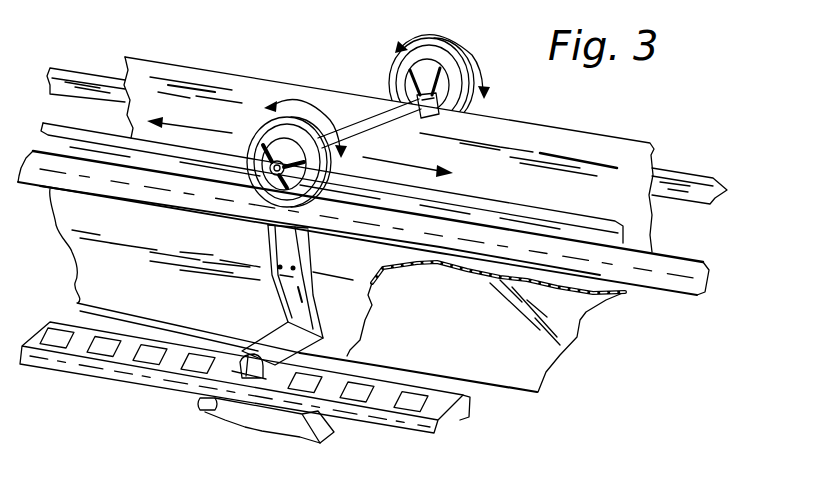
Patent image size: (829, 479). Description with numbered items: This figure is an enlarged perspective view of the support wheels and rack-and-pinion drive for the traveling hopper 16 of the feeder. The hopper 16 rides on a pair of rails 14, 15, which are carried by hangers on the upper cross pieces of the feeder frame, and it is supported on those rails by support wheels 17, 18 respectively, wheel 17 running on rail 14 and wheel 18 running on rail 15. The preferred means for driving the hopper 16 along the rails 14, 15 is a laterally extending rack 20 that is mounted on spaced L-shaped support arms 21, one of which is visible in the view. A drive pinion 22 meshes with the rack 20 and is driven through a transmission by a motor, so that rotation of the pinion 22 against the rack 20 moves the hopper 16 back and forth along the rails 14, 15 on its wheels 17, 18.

The rail 14 is at (673, 168).
The rail 15 is at (673, 270).
The traveling hopper 16 is at (193, 95).
The support wheel 17 is at (448, 62).
The support wheel 18 is at (262, 135).
The rack 20 is at (466, 396).
The L-shaped support arm 21 is at (268, 294).
The drive pinion 22 is at (198, 403).